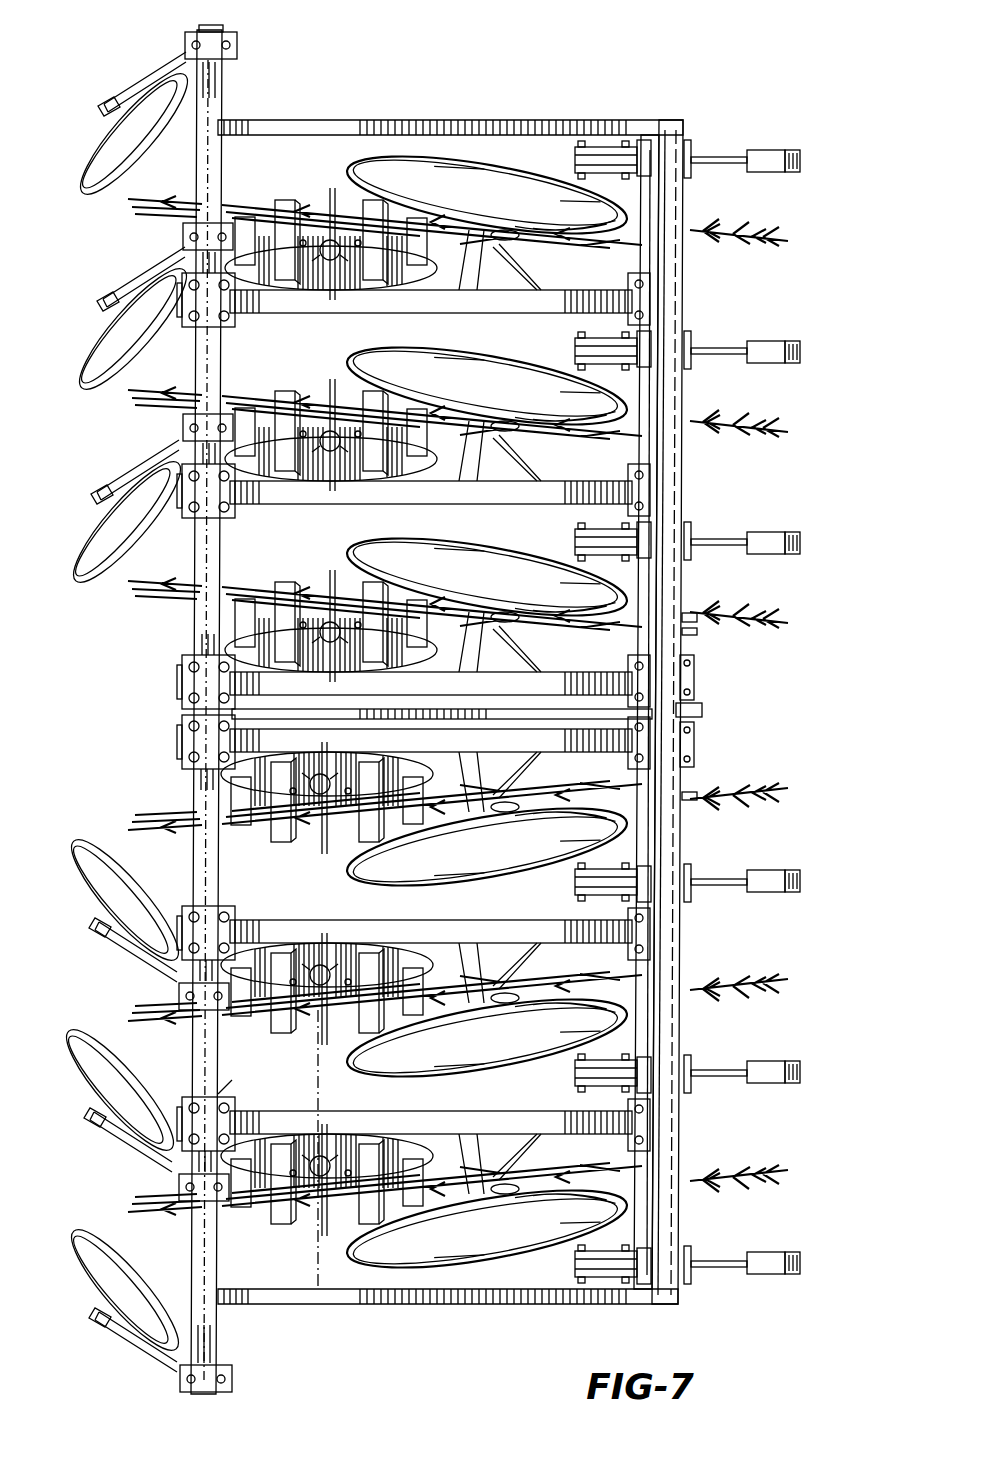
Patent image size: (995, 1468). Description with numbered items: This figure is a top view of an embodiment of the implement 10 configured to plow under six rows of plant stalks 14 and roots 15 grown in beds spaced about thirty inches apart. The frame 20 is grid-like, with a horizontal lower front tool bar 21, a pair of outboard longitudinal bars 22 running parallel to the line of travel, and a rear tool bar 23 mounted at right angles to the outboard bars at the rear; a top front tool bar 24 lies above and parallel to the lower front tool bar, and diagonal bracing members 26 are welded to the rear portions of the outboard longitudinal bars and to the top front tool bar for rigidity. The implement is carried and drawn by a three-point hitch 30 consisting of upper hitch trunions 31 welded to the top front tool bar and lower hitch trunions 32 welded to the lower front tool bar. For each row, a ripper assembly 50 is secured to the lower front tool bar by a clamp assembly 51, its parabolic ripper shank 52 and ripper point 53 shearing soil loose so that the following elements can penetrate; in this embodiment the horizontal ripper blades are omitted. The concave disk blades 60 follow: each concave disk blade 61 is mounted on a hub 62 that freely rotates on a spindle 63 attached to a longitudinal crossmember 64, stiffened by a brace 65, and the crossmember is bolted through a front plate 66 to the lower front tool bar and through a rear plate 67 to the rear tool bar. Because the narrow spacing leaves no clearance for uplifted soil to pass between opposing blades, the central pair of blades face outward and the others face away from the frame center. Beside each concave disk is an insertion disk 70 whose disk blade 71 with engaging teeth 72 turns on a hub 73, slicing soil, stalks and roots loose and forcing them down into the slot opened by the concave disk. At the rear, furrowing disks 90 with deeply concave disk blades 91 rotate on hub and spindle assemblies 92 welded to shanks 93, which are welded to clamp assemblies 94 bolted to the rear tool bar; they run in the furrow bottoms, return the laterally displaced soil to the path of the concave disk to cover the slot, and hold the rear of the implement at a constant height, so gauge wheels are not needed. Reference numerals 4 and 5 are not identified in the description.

The centerline 4 is at (322, 1098).
The gauge line 5 is at (235, 1073).
The implement 10 is at (665, 52).
The plant stalks 14 is at (437, 693).
The roots 15 is at (178, 192).
The frame 20 is at (372, 118).
The lower front tool bar 21 is at (653, 252).
The outboard longitudinal bars 22 is at (248, 120).
The rear tool bar 23 is at (218, 88).
The top front tool bar 24 is at (680, 195).
The diagonal bracing members 26 is at (424, 118).
The three-point hitch 30 is at (701, 696).
The upper hitch trunions 31 is at (702, 712).
The lower hitch trunions 32 is at (698, 628).
The ripper assembly 50 is at (707, 154).
The clamp assembly 51 is at (576, 145).
The parabolic ripper shank 52 is at (750, 150).
The ripper point 53 is at (782, 150).
The concave disk blades 60 is at (487, 687).
The concave disk blade 61 is at (487, 712).
The hub 62 is at (513, 245).
The spindle 63 is at (473, 712).
The longitudinal crossmember 64 is at (522, 712).
The brace 65 is at (431, 712).
The front plate 66 is at (619, 712).
The rear plate 67 is at (226, 320).
The insertion disk 70 is at (336, 712).
The disk blade 71 is at (346, 708).
The engaging teeth 72 is at (329, 711).
The hub 73 is at (335, 712).
The furrowing disks 90 is at (114, 703).
The deeply concave disk blades 91 is at (127, 712).
The hub and spindle assembly 92 is at (115, 102).
The shank 93 is at (148, 67).
The clamp assembly 94 is at (238, 44).